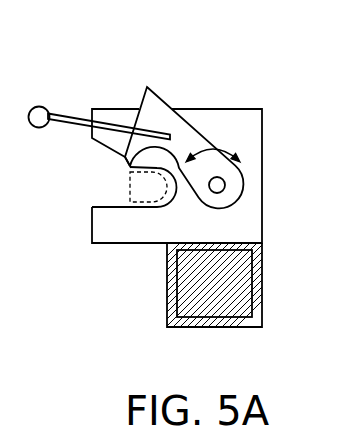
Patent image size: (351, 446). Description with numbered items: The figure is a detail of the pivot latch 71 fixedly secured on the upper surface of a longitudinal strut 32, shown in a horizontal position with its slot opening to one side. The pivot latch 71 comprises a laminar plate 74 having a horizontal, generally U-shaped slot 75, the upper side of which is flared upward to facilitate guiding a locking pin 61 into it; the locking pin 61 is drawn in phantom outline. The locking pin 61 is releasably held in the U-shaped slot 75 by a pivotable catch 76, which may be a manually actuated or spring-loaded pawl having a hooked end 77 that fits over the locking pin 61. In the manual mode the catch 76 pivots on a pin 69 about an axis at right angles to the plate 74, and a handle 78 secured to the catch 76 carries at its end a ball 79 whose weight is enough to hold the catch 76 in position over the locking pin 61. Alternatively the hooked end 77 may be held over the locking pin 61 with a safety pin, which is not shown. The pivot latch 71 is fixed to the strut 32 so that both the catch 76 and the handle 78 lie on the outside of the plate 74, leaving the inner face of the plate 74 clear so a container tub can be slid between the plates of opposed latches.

The strut 32 is at (265, 280).
The locking pin 61 is at (130, 172).
The pin 69 is at (226, 185).
The pivot latch 71 is at (126, 247).
The laminar plate 74 is at (256, 140).
The U-shaped slot 75 is at (112, 208).
The catch 76 is at (185, 121).
The hooked end 77 is at (129, 166).
The handle 78 is at (75, 117).
The ball 79 is at (43, 107).